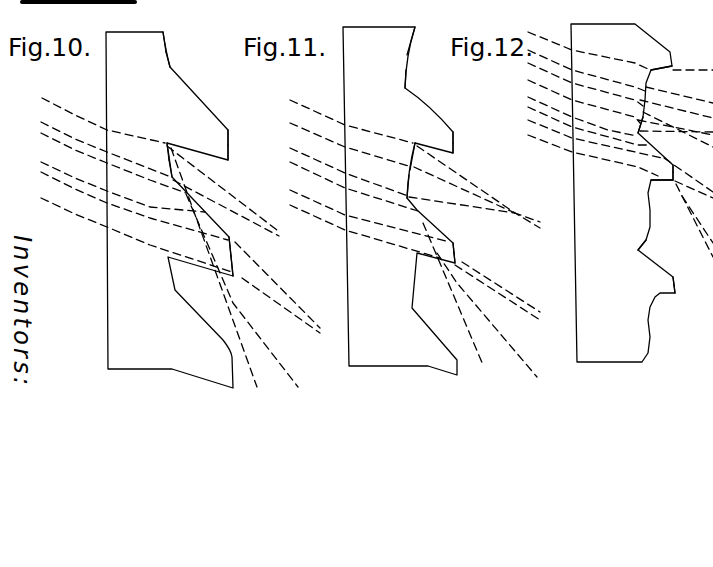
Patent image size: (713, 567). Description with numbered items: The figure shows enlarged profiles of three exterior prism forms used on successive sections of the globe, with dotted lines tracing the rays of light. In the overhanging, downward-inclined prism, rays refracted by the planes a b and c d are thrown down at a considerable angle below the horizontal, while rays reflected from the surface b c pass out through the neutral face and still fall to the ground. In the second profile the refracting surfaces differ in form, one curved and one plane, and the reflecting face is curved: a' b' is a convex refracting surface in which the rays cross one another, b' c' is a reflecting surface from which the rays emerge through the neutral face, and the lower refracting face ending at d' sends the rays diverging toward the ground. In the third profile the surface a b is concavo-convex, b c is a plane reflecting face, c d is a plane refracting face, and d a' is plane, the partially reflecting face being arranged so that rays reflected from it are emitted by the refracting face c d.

In FIG. 10, the refracting plane end point a is at (173, 34).
In FIG. 11, the refracting plane end point a is at (419, 33).
In FIG. 12, the refracting plane end point a is at (652, 60).
In FIG. 10, the refracting-reflecting face junction b is at (178, 65).
In FIG. 11, the refracting-reflecting face junction b is at (417, 82).
In FIG. 12, the refracting-reflecting face junction b is at (627, 129).
In FIG. 10, the reflecting-refracting face junction c is at (235, 130).
In FIG. 11, the reflecting-refracting face junction c is at (461, 129).
In FIG. 12, the reflecting-refracting face junction c is at (680, 158).
In FIG. 10, the refracting face end point d is at (236, 157).
In FIG. 11, the refracting face end point d is at (462, 156).
In FIG. 12, the refracting face end point d is at (682, 185).
In FIG. 10, the convex refracting-surface end point a' is at (167, 141).
In FIG. 11, the convex refracting-surface end point a' is at (412, 146).
In FIG. 12, the convex refracting-surface end point a' is at (651, 176).
In FIG. 10, the refracting-reflecting surface junction b' is at (159, 173).
In FIG. 11, the refracting-reflecting surface junction b' is at (397, 190).
In FIG. 12, the refracting-reflecting surface junction b' is at (653, 244).
In FIG. 10, the reflecting surface end point c' is at (234, 240).
In FIG. 11, the reflecting surface end point c' is at (463, 240).
In FIG. 12, the reflecting surface end point c' is at (684, 276).
In FIG. 10, the refracting-face end point d' is at (244, 271).
In FIG. 11, the refracting-face end point d' is at (466, 268).
In FIG. 12, the refracting-face end point d' is at (687, 296).